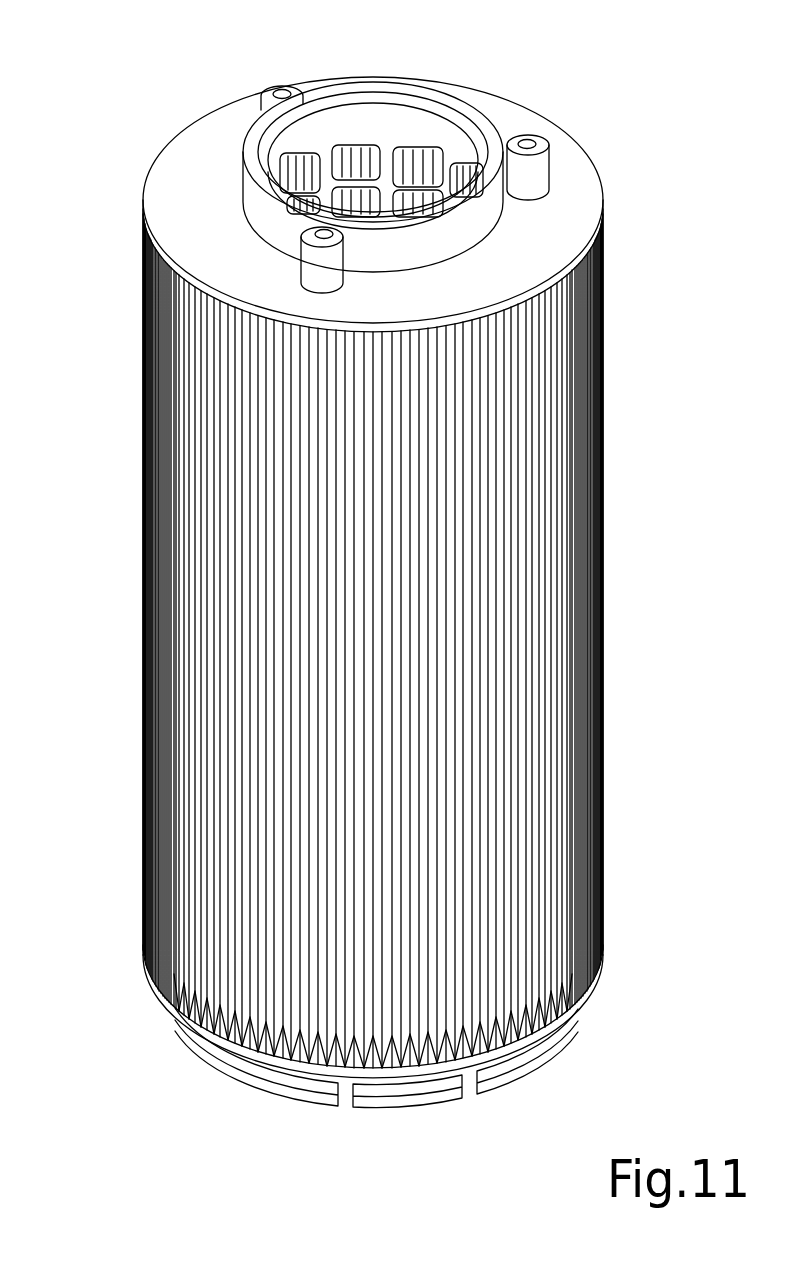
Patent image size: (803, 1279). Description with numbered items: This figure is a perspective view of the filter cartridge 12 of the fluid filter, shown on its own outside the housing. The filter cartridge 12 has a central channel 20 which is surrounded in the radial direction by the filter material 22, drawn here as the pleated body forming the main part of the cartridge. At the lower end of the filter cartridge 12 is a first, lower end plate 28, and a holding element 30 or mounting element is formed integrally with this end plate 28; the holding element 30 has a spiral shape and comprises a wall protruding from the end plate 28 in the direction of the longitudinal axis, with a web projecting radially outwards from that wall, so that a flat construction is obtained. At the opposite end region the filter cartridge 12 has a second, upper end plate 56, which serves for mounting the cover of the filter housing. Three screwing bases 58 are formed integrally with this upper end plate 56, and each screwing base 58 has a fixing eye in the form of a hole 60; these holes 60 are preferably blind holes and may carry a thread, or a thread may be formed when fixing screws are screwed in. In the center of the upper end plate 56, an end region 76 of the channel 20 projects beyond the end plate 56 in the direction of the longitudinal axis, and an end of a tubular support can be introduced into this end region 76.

The filter cartridge 12 is at (137, 140).
The channel 20 is at (387, 186).
The filter material 22 is at (558, 600).
The end plate 28 is at (585, 1012).
The holding element 30 is at (483, 1087).
The end plate 56 is at (558, 220).
The screwing base 58 is at (262, 106).
The hole 60 is at (284, 90).
The end region 76 is at (437, 152).